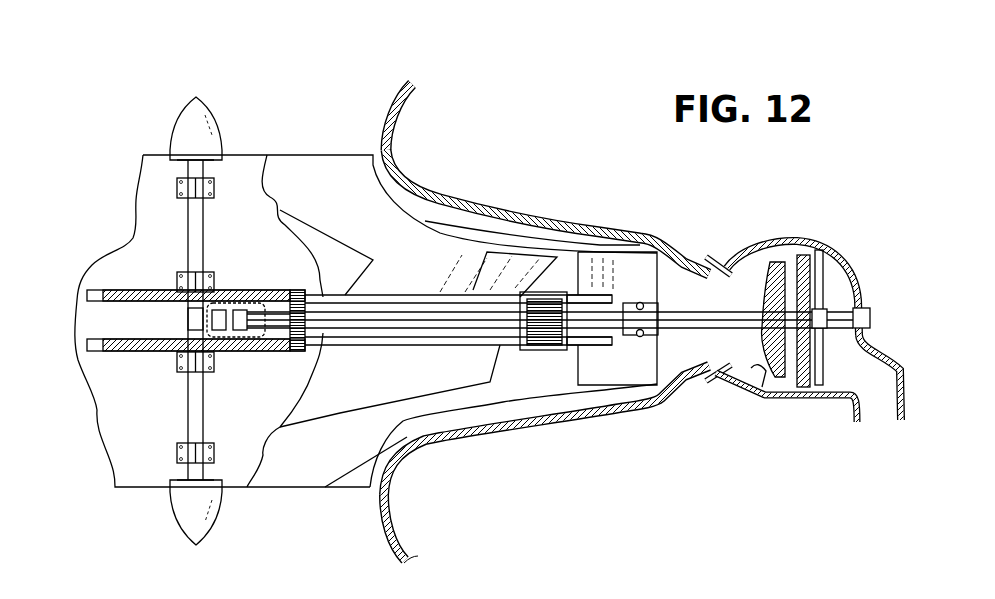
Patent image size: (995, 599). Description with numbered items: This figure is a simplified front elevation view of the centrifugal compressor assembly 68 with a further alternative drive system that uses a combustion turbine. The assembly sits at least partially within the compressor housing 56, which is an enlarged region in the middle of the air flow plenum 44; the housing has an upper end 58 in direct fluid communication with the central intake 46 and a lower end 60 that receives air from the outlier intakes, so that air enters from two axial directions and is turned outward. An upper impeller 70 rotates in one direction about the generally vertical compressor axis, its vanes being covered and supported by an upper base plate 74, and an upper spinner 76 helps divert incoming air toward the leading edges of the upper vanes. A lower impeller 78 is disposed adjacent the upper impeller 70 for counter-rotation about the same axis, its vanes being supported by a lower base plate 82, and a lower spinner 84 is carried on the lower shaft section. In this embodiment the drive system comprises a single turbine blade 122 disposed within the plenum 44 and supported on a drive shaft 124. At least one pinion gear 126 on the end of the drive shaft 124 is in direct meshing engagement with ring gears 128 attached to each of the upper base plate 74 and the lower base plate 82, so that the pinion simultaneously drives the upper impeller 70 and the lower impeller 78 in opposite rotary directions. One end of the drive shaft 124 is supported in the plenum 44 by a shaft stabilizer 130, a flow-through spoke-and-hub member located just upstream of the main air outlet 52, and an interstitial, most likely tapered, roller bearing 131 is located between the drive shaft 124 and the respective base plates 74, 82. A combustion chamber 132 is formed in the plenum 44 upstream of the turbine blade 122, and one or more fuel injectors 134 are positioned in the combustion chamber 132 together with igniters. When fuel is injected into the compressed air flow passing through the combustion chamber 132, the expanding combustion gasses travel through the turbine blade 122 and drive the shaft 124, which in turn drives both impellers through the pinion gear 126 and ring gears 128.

The air flow plenum 44 is at (503, 207).
The central intake 46 is at (410, 82).
The main air outlet 52 is at (900, 425).
The compressor housing 56 is at (508, 433).
The upper end 58 is at (547, 150).
The lower end 60 is at (546, 464).
The centrifugal compressor assembly 68 is at (323, 153).
The upper impeller 70 is at (223, 265).
The upper base plate 74 is at (87, 294).
The upper spinner 76 is at (178, 132).
The lower impeller 78 is at (278, 428).
The lower base plate 82 is at (90, 344).
The lower spinner 84 is at (173, 508).
The turbine blade 122 is at (772, 388).
The drive shaft 124 is at (815, 329).
The pinion gear 126 is at (551, 348).
The ring gear 128 is at (572, 292).
The shaft stabilizer 130 is at (822, 285).
The roller bearing 131 is at (630, 298).
The combustion chamber 132 is at (766, 397).
The fuel injector 134 is at (707, 253).